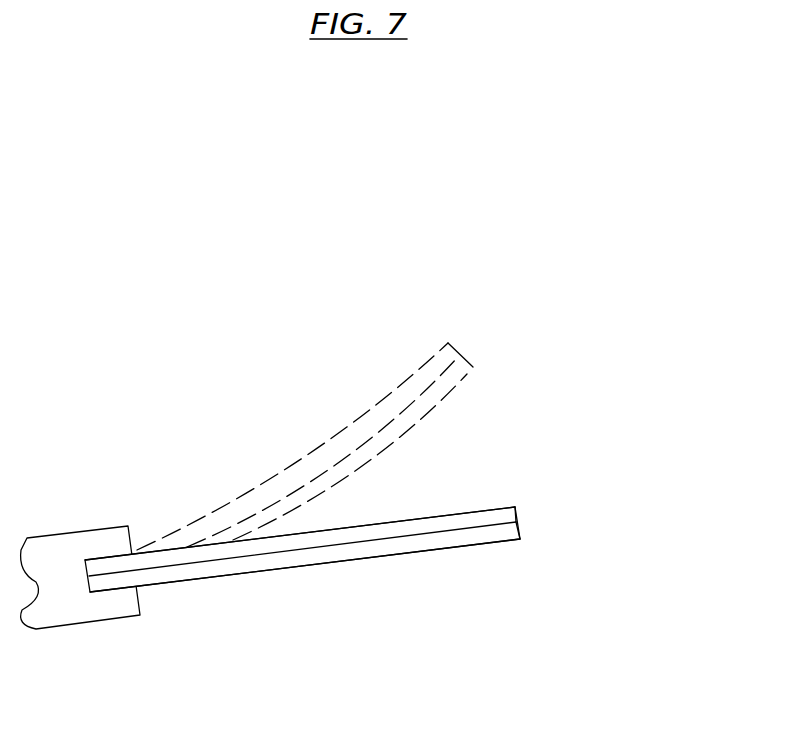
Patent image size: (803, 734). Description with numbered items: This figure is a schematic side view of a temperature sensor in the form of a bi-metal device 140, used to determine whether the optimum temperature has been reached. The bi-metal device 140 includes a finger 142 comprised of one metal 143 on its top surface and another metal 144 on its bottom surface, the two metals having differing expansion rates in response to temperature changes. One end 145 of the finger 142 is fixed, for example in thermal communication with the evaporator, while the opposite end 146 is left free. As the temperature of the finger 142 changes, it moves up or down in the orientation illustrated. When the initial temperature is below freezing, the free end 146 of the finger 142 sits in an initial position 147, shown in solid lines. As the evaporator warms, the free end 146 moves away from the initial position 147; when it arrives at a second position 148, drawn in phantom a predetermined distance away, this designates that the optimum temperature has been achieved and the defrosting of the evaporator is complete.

The bi-metal device 140 is at (606, 378).
The finger 142 is at (314, 570).
The one metal 143 is at (393, 518).
The another metal 144 is at (387, 558).
The one end 145 is at (118, 593).
The opposite end 146 is at (517, 503).
The initial position 147 is at (523, 512).
The second position 148 is at (455, 337).